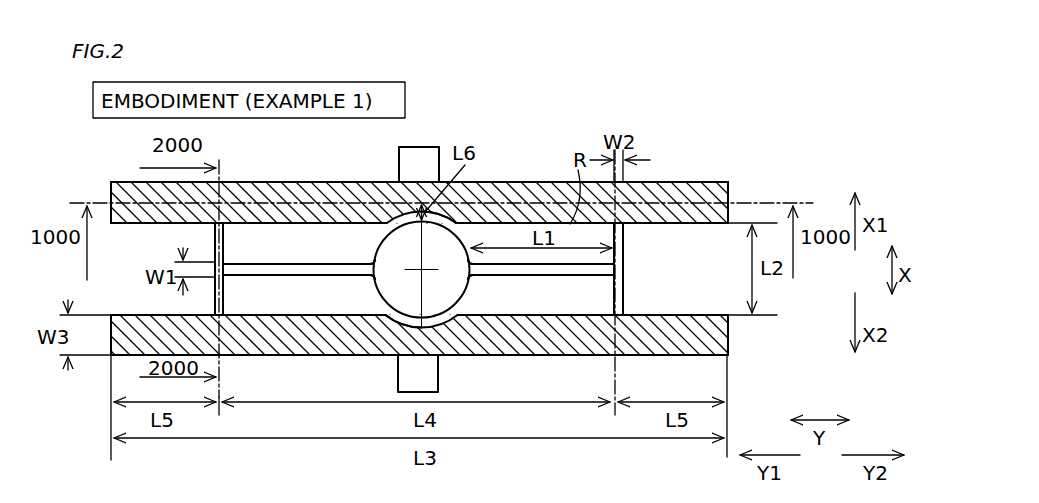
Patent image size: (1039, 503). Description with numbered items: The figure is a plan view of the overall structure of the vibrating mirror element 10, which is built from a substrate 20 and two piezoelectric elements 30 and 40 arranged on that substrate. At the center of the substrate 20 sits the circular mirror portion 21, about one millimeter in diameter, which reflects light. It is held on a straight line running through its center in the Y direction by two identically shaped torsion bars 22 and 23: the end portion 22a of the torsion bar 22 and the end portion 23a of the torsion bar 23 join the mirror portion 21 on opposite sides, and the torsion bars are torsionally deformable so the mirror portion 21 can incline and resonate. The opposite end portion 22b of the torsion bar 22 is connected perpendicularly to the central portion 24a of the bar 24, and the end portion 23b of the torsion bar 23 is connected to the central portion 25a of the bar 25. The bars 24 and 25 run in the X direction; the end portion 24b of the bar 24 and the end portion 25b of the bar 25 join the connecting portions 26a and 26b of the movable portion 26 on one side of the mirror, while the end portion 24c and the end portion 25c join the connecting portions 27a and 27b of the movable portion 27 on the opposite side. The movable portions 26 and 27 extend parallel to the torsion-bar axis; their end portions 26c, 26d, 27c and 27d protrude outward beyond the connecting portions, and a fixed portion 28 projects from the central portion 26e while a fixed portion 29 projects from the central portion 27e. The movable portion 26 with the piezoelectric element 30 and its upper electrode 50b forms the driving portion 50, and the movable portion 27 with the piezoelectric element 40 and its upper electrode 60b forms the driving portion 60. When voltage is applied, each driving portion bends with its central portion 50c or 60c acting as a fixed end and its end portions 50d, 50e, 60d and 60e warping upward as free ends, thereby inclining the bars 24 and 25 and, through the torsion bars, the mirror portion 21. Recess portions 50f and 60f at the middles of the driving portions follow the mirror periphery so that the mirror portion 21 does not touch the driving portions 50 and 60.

The vibrating mirror element 10 is at (807, 167).
The substrate 20 is at (262, 157).
The mirror portion 21 is at (398, 248).
The torsion bar 22 is at (327, 276).
The end portion of the torsion bar 22 22a is at (371, 266).
The end portion of the torsion bar 22 22b is at (263, 284).
The torsion bar 23 is at (503, 266).
The end portion of the torsion bar 23 23a is at (469, 270).
The end portion of the torsion bar 23 23b is at (623, 268).
The bar 24 is at (215, 245).
The central portion of the bar 24 24a is at (273, 287).
The end portion of the bar 24 24b is at (262, 223).
The end portion of the bar 24 24c is at (215, 308).
The bar 25 is at (623, 304).
The central portion of the bar 25 25a is at (681, 277).
The end portion of the bar 25 25b is at (655, 233).
The end portion of the bar 25 25c is at (613, 308).
The movable portion 26 is at (257, 180).
The connecting portion of the movable portion 26 26a is at (273, 243).
The connecting portion of the movable portion 26 26b is at (672, 243).
The end portion of the movable portion 26 26c is at (102, 178).
The end portion of the movable portion 26 26d is at (729, 179).
The central portion of the movable portion 26 26e is at (352, 179).
The movable portion 27 is at (268, 338).
The connecting portion of the movable portion 27 27a is at (151, 295).
The connecting portion of the movable portion 27 27b is at (565, 295).
The end portion of the movable portion 27 27c is at (62, 361).
The end portion of the movable portion 27 27d is at (776, 360).
The central portion of the movable portion 27 27e is at (367, 353).
The fixed portion 28 is at (418, 170).
The fixed portion 29 is at (417, 380).
The piezoelectric element 30 is at (414, 178).
The piezoelectric element 40 is at (417, 357).
The driving portion 50 is at (434, 178).
The upper electrode 50b is at (520, 188).
The central portion of the driving portion 50 50c is at (377, 182).
The end portion of the driving portion 50 50d is at (110, 200).
The end portion of the driving portion 50 50e is at (750, 158).
The recess portion 50f is at (449, 221).
The driving portion 60 is at (445, 357).
The upper electrode 60b is at (543, 338).
The central portion of the driving portion 60 60c is at (418, 337).
The end portion of the driving portion 60 60d is at (108, 357).
The end portion of the driving portion 60 60e is at (728, 357).
The recess portion 60f is at (422, 326).